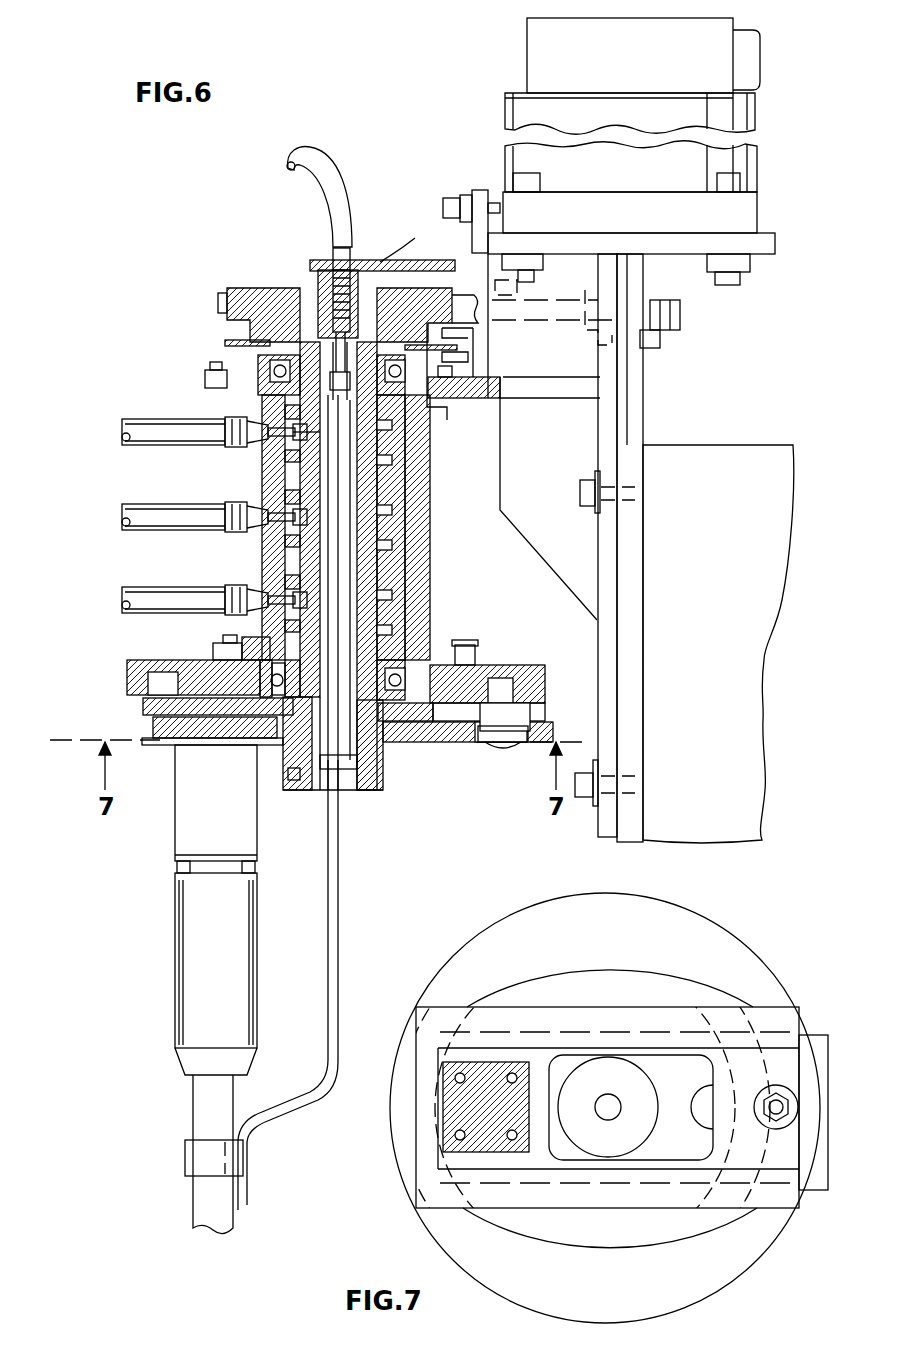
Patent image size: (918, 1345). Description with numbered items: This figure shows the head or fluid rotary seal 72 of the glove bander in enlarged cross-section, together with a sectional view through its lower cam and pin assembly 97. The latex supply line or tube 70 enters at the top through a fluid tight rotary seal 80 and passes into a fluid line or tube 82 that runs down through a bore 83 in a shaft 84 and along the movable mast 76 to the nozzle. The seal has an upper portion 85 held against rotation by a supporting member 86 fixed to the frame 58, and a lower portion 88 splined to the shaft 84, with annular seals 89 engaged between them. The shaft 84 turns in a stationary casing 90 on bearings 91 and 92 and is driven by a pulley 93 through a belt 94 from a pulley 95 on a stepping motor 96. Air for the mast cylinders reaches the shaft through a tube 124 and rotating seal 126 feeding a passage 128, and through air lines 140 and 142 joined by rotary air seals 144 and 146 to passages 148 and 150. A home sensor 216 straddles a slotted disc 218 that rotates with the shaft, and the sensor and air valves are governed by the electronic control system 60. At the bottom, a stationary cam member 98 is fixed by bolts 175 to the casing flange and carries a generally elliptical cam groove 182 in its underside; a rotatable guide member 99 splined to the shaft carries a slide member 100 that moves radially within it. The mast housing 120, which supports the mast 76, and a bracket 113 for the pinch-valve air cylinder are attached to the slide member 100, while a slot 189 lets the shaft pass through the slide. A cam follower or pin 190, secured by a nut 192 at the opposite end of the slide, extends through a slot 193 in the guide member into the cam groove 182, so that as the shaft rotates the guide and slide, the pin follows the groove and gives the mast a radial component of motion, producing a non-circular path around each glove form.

In FIG. 6, the frame 58 is at (752, 430).
In FIG. 6, the electronic control system 60 is at (477, 350).
In FIG. 6, the fluid line or tube 70 is at (340, 175).
In FIG. 6, the head or fluid rotary seal 72 is at (432, 593).
In FIG. 6, the movable mast 76 is at (195, 1105).
In FIG. 6, the fluid tight rotary seal 80 is at (320, 270).
In FIG. 6, the fluid line or tube 82 is at (338, 868).
In FIG. 6, the bore 83 is at (340, 780).
In FIG. 7, the bore 83 is at (608, 1120).
In FIG. 6, the shaft 84 is at (385, 455).
In FIG. 6, the upper portion 85 is at (355, 270).
In FIG. 6, the supporting member 86 is at (445, 262).
In FIG. 6, the lower portion 88 is at (320, 285).
In FIG. 6, the annular seals 89 is at (397, 236).
In FIG. 6, the stationary casing 90 is at (410, 535).
In FIG. 6, the bearing 91 is at (268, 365).
In FIG. 6, the bearing 92 is at (250, 690).
In FIG. 6, the pulley 93 is at (235, 300).
In FIG. 6, the belt 94 is at (680, 312).
In FIG. 6, the pulley 95 is at (660, 340).
In FIG. 6, the stepping motor 96 is at (757, 150).
In FIG. 6, the cam and pin assembly 97 is at (100, 688).
In FIG. 7, the cam and pin assembly 97 is at (780, 940).
In FIG. 6, the stationary cam member 98 is at (495, 665).
In FIG. 7, the stationary cam member 98 is at (745, 1270).
In FIG. 6, the rotatable guide member 99 is at (143, 705).
In FIG. 7, the rotatable guide member 99 is at (770, 1007).
In FIG. 6, the slide member 100 is at (205, 752).
In FIG. 7, the slide member 100 is at (828, 1048).
In FIG. 7, the bracket 113 is at (455, 1135).
In FIG. 6, the mast housing 120 is at (175, 960).
In FIG. 6, the fluid line or tube 124 is at (150, 430).
In FIG. 6, the rotating seal 126 is at (295, 440).
In FIG. 6, the passage 128 is at (315, 435).
In FIG. 6, the tube or air line 140 is at (130, 517).
In FIG. 6, the tube or air line 142 is at (130, 598).
In FIG. 6, the rotary air seal 144 is at (295, 520).
In FIG. 6, the rotary air seal 146 is at (295, 604).
In FIG. 6, the passage 148 is at (298, 780).
In FIG. 6, the passage 150 is at (357, 762).
In FIG. 6, the bolts 175 is at (460, 645).
In FIG. 7, the cam groove 182 is at (570, 975).
In FIG. 7, the slot 189 is at (675, 1162).
In FIG. 6, the cam follower or pin 190 is at (513, 683).
In FIG. 6, the nut 192 is at (503, 745).
In FIG. 7, the nut 192 is at (790, 1110).
In FIG. 7, the slot 193 is at (740, 1078).
In FIG. 6, the home sensor 216 is at (477, 363).
In FIG. 6, the disc 218 is at (230, 340).